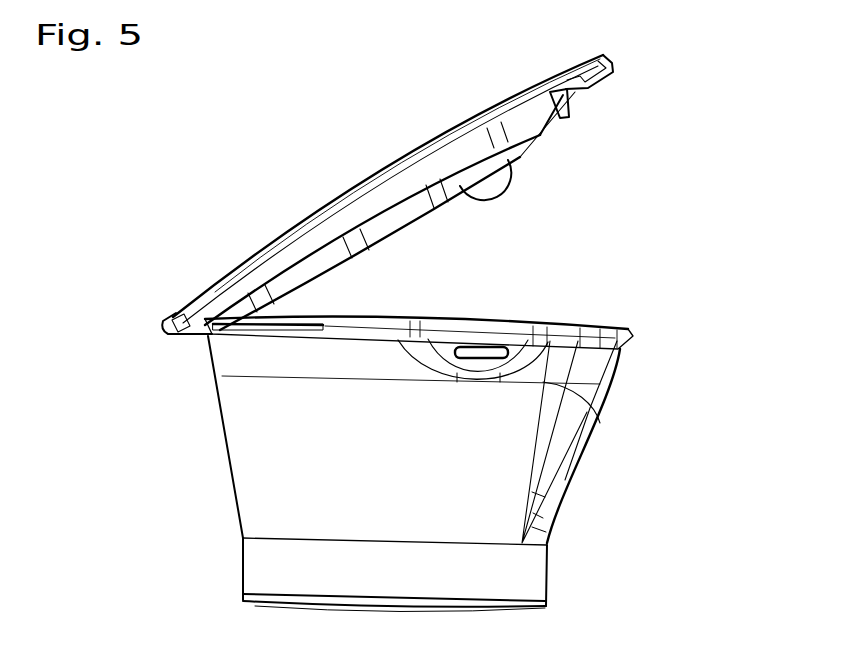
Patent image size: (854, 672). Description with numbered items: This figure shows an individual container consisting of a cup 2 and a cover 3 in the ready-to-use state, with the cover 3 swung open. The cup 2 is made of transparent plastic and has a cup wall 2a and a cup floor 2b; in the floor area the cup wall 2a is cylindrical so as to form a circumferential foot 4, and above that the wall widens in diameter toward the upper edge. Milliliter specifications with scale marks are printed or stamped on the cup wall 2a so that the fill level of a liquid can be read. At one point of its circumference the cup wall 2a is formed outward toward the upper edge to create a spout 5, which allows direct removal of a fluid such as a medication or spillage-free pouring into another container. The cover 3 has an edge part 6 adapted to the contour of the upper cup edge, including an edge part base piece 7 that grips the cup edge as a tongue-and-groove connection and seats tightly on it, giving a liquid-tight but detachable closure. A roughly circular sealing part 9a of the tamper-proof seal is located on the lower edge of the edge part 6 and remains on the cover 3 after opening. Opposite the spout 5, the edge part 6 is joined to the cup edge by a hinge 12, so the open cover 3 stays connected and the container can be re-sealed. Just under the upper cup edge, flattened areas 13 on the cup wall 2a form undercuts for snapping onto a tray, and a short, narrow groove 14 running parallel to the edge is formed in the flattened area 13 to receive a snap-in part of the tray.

The cup 2 is at (593, 453).
The cup wall 2a is at (502, 510).
The cup floor 2b is at (428, 606).
The cover 3 is at (290, 193).
The circumferential foot 4 is at (490, 595).
The spout 5 is at (620, 373).
The edge part 6 is at (593, 67).
The edge part base piece 7 is at (548, 110).
The sealing part 9a is at (487, 194).
The hinge 12 is at (205, 323).
The flattened areas 13 is at (512, 347).
The groove 14 is at (476, 352).